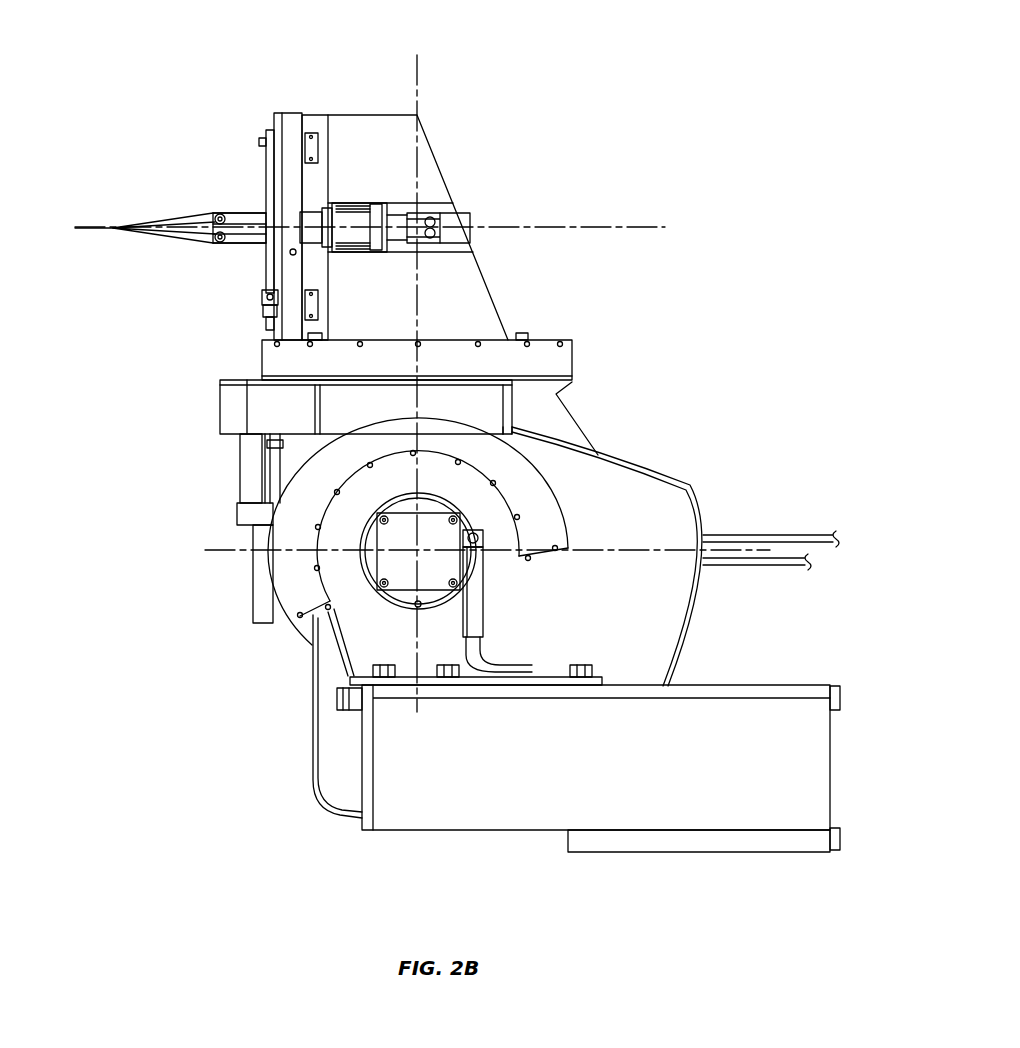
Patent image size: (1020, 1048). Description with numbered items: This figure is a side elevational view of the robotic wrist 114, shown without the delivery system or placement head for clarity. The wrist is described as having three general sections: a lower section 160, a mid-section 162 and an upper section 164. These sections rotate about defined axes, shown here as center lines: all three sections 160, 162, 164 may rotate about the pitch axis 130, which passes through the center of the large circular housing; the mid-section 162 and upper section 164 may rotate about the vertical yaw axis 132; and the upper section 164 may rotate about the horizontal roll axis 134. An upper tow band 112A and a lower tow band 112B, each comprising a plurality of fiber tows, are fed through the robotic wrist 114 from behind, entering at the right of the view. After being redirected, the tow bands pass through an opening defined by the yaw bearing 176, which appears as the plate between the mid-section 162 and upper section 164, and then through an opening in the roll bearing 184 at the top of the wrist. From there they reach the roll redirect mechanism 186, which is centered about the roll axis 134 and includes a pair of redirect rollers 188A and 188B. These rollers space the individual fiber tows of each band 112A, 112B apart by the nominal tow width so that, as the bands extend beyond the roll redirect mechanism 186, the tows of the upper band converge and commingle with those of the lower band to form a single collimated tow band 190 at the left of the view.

The upper tow band 112A is at (243, 213).
The lower tow band 112B is at (240, 245).
The robotic wrist 114 is at (243, 696).
The pitch axis 130 is at (413, 555).
The yaw axis 132 is at (415, 74).
The roll axis 134 is at (642, 227).
The lower section 160 is at (210, 528).
The mid-section 162 is at (202, 365).
The upper section 164 is at (262, 118).
The yaw bearing 176 is at (572, 360).
The roll bearing 184 is at (297, 112).
The roll redirect mechanism 186 is at (200, 257).
The redirect roller 188A is at (185, 213).
The redirect roller 188B is at (185, 240).
The single collimated tow band 190 is at (100, 228).